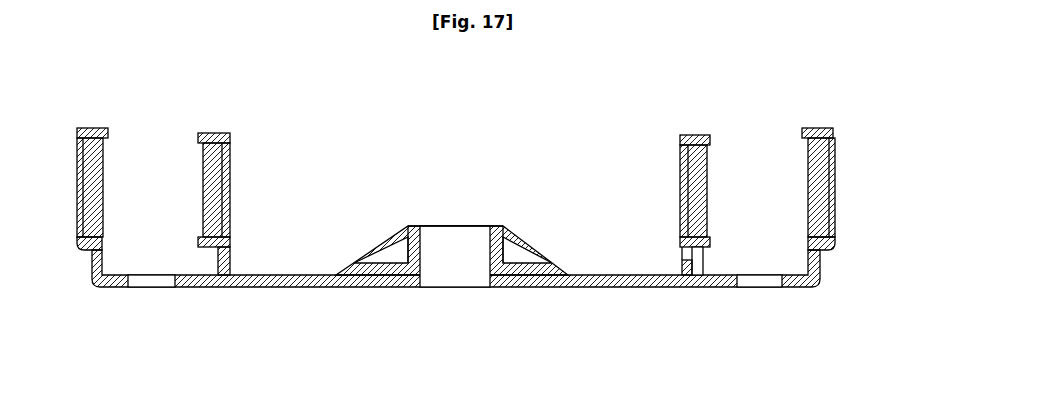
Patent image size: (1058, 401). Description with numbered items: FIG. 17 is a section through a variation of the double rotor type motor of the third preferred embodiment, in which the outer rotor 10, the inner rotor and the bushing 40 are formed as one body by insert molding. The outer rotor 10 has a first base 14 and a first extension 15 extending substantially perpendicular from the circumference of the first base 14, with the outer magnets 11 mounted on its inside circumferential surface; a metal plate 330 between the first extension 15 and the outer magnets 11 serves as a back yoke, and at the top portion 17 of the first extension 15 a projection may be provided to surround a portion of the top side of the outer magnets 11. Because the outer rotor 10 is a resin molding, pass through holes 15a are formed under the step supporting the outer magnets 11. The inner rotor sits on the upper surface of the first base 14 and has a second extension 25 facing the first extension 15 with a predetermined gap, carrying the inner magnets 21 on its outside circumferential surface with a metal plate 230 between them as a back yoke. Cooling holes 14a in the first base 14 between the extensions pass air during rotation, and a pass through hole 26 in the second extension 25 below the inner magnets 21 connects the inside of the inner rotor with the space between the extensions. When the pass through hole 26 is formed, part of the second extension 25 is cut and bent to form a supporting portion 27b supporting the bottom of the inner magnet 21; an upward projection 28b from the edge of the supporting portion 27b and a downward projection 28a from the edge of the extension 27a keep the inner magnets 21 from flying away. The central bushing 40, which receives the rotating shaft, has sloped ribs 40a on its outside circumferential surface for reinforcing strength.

The outer rotor 10 is at (597, 292).
The first base 14 is at (294, 288).
The cooling holes 14a is at (147, 290).
The first extension 15 is at (836, 163).
The pass through holes 15a is at (821, 259).
The top flange of side wall 17 is at (816, 128).
The outer magnets 11 is at (92, 184).
The metal plate 330 is at (82, 128).
The inner magnets 21 is at (227, 202).
The metal plate 230 is at (222, 133).
The pass through hole 26 is at (228, 255).
The bushing 40 is at (456, 221).
The rib 40a is at (392, 253).
The second extension 25 is at (680, 189).
The extension 27a is at (694, 133).
The supporting portion 27b is at (700, 253).
The downward projection 28a is at (710, 140).
The upward projection 28b is at (710, 242).